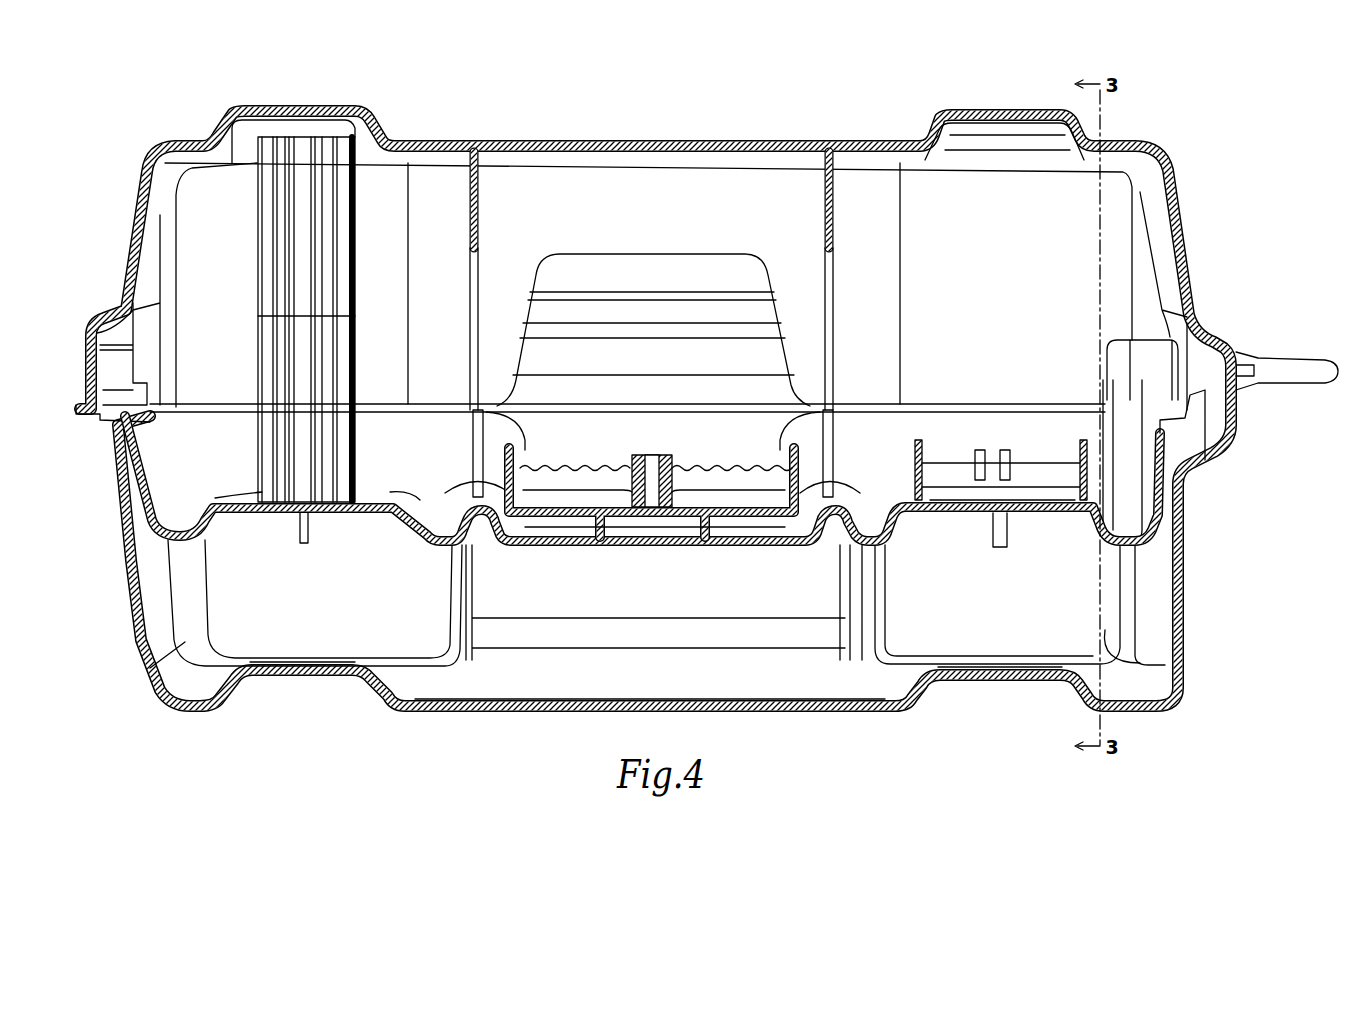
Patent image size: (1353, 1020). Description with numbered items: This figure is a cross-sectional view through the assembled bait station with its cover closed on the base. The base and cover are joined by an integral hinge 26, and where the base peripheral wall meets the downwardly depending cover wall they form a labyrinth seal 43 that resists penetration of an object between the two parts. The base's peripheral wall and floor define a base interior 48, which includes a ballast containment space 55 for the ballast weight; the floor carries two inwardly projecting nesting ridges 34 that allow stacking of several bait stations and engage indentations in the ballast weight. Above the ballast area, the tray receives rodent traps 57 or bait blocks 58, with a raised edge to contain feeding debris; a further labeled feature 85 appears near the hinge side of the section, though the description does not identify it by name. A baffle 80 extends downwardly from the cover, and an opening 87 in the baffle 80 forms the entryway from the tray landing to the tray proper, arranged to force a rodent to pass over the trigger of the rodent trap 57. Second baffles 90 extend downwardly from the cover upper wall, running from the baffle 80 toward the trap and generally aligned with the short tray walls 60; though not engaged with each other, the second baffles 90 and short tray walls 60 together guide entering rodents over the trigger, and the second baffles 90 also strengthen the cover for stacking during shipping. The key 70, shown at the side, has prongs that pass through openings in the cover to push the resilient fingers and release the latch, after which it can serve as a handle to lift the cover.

The integral hinge 26 is at (83, 416).
The nesting ridges 34 is at (305, 672).
The labyrinth seal 43 is at (1238, 418).
The base interior 48 is at (142, 613).
The ballast containment space 55 is at (648, 700).
The rodent trap 57 is at (652, 455).
The bait blocks 58 is at (360, 232).
The short tray walls 60 is at (472, 440).
The key 70 is at (1282, 360).
The baffle 80 is at (1005, 242).
The tray 85 is at (117, 470).
The opening 87 is at (660, 254).
The second baffles 90 is at (479, 252).